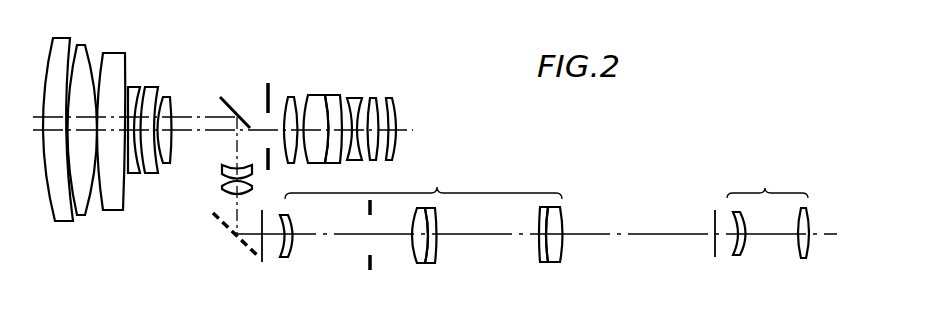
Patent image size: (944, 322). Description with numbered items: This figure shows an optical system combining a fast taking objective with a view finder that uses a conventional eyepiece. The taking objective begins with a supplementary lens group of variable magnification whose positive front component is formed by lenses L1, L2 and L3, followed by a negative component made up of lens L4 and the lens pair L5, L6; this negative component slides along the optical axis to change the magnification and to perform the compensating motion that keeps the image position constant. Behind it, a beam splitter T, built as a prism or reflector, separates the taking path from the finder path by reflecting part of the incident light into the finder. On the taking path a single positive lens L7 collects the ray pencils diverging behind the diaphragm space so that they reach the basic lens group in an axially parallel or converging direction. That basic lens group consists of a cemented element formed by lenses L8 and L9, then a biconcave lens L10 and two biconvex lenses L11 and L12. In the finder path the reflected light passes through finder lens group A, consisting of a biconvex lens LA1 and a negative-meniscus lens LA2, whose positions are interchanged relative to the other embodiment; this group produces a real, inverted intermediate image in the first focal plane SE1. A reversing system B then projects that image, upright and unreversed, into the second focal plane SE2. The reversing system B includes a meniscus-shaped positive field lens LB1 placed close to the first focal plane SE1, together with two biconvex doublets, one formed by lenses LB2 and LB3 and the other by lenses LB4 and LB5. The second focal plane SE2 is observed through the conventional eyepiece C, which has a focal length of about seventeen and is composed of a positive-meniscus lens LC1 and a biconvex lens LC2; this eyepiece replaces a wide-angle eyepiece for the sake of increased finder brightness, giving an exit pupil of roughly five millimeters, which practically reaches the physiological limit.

The lens L1 is at (53, 37).
The lens L2 is at (82, 41).
The lens L3 is at (106, 50).
The lens L4 is at (133, 82).
The lens L5 is at (150, 82).
The lens L6 is at (167, 93).
The beam splitter T is at (235, 98).
The finder lens group A is at (226, 186).
The biconvex lens LA1 is at (218, 191).
The negative-meniscus lens LA2 is at (220, 169).
The single lens L7 is at (288, 93).
The lens of cemented element L8 is at (309, 92).
The lens of cemented element L9 is at (331, 92).
The biconcave lens L10 is at (352, 94).
The biconvex lens L11 is at (372, 94).
The biconvex lens L12 is at (391, 94).
The first focal plane SE1 is at (257, 248).
The reversing system B is at (437, 235).
The meniscus-shaped positive field lens LB1 is at (284, 261).
The lens of biconvex doublet LB2 is at (422, 265).
The lens of biconvex doublet LB3 is at (428, 265).
The lens of biconvex doublet LB4 is at (548, 265).
The lens of biconvex doublet LB5 is at (556, 265).
The second focal plane SE2 is at (709, 247).
The conventional eyepiece C is at (773, 235).
The positive-meniscus lens LC1 is at (738, 259).
The biconvex lens LC2 is at (803, 260).